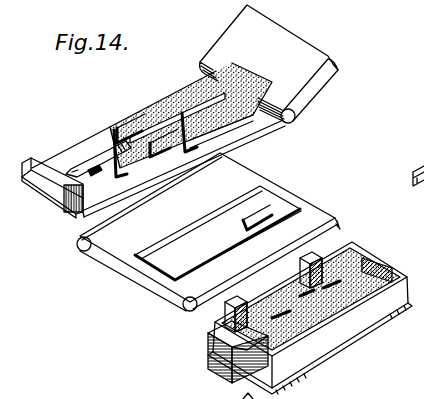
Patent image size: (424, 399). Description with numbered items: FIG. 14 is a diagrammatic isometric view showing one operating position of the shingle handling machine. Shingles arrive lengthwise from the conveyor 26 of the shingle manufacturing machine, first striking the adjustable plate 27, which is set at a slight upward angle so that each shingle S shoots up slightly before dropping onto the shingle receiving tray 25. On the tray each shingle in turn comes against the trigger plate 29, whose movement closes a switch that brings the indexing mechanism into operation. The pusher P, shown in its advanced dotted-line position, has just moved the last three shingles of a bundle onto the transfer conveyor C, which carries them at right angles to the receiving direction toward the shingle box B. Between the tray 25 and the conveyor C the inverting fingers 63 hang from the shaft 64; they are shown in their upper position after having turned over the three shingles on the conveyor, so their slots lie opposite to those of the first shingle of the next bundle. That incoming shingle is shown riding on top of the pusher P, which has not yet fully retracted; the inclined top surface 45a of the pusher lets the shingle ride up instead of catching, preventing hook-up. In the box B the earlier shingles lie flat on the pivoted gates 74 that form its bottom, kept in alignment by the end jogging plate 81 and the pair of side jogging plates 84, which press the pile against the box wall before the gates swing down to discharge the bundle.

The shingle receiving tray 25 is at (54, 166).
The conveyor 26 is at (269, 64).
The adjustable plate 27 is at (180, 94).
The trigger plate 29 is at (50, 197).
The inclined top surface 45a is at (137, 118).
The inverting fingers 63 is at (223, 131).
The shaft 64 is at (92, 176).
The pivoted gates 74 is at (212, 364).
The jogging plate 81 is at (385, 259).
The side jogging plates 84 is at (333, 256).
The pusher P is at (94, 156).
The shingle S is at (265, 80).
The transfer conveyor C is at (208, 232).
The shingle box B is at (310, 318).